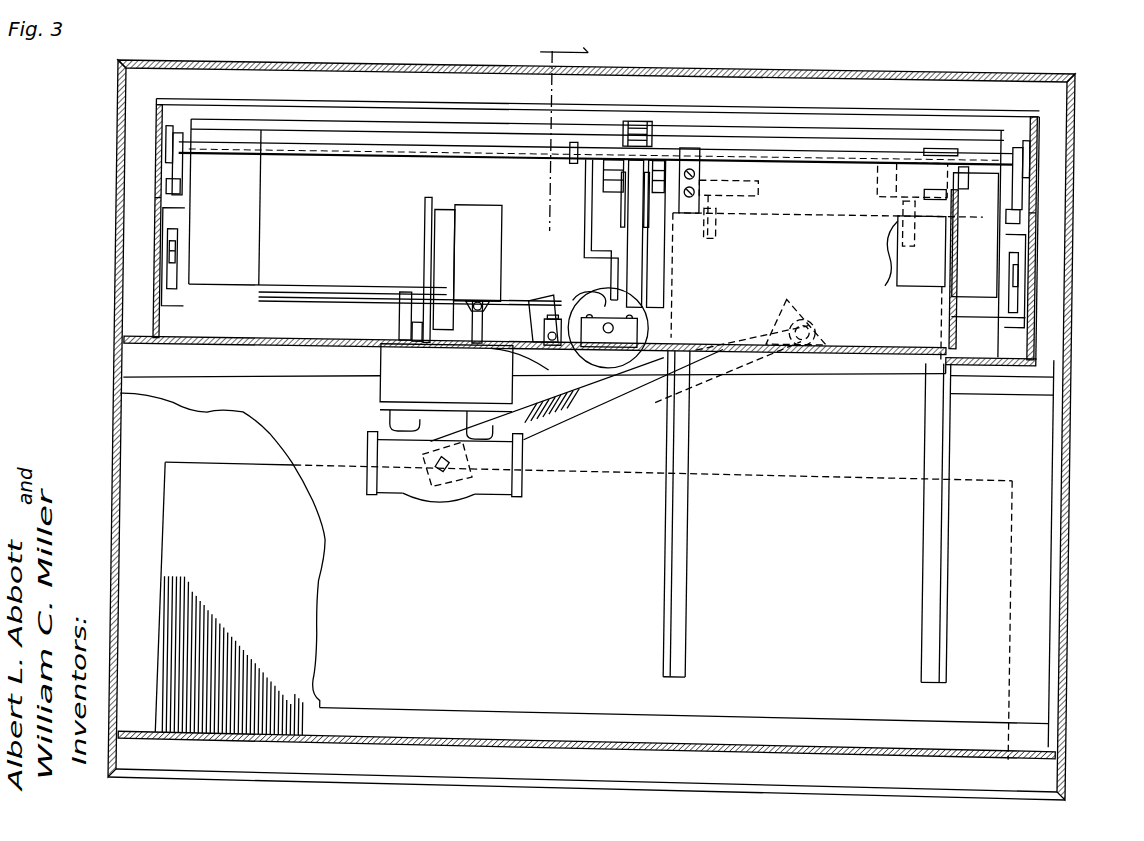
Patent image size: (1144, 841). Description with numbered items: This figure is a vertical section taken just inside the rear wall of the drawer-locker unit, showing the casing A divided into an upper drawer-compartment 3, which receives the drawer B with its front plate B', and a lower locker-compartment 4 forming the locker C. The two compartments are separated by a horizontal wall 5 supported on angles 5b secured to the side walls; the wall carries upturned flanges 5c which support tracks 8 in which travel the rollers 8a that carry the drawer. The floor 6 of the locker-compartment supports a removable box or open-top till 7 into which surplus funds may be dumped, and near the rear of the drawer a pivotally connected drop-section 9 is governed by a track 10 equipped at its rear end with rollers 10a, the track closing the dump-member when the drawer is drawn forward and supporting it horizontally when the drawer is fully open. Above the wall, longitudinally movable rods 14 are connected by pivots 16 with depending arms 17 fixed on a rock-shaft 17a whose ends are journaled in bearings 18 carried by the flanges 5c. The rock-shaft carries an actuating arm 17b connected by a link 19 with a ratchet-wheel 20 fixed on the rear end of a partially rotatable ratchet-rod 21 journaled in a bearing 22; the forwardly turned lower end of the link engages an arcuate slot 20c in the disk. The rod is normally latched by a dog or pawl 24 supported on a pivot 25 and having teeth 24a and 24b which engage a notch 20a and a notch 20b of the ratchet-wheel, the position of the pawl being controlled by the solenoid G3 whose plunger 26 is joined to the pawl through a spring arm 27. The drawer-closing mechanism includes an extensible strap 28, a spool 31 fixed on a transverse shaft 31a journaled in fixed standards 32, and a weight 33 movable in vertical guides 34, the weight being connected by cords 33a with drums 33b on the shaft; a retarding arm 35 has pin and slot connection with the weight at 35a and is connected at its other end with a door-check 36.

The upper drawer-compartment 3 is at (823, 82).
The lower locker-compartment 4 is at (443, 221).
The horizontal wall 5 is at (292, 340).
The angles 5b is at (158, 300).
The upturned flanges 5c is at (158, 197).
The floor of the locker-compartment 6 is at (556, 731).
The removable box or open-top till 7 is at (197, 483).
The tracks 8 is at (165, 235).
The rollers 8a is at (165, 257).
The drop-section 9 is at (346, 295).
The track 10 is at (398, 290).
The rollers 10a is at (403, 318).
The longitudinally movable rods 14 is at (162, 178).
The pivots 16 is at (180, 189).
The depending arms 17 is at (184, 168).
The rock-shaft 17a is at (368, 152).
The actuating arm 17b is at (577, 136).
The bearings 18 is at (168, 139).
The link 19 is at (587, 180).
The ratchet-wheel 20 is at (615, 362).
The notch or tooth 20a is at (588, 298).
The tooth or notch 20b is at (648, 328).
The arcuate slot 20c is at (616, 290).
The ratchet-rod 21 is at (615, 327).
The bearing 22 is at (650, 325).
The dog or pawl 24 is at (530, 364).
The tooth 24a is at (585, 298).
The tooth 24b is at (598, 420).
The pivot 25 is at (548, 330).
The plunger or core 26 is at (446, 392).
The spring arm 27 is at (446, 394).
The extensible strap 28 is at (637, 241).
The spool or drum 31 is at (650, 118).
The transverse shaft 31a is at (968, 166).
The fixed standards 32 is at (955, 225).
The weight 33 is at (915, 256).
The cords or wires 33a is at (896, 198).
The drums 33b is at (718, 135).
The vertical guides 34 is at (668, 512).
The arm 35 is at (704, 378).
The pin and slot connection 35a is at (796, 309).
The door-check 36 is at (414, 484).
The casing A is at (377, 60).
The drawer B is at (1020, 224).
The front plate B' is at (597, 193).
The locker C is at (138, 412).
The solenoid G3 is at (467, 273).